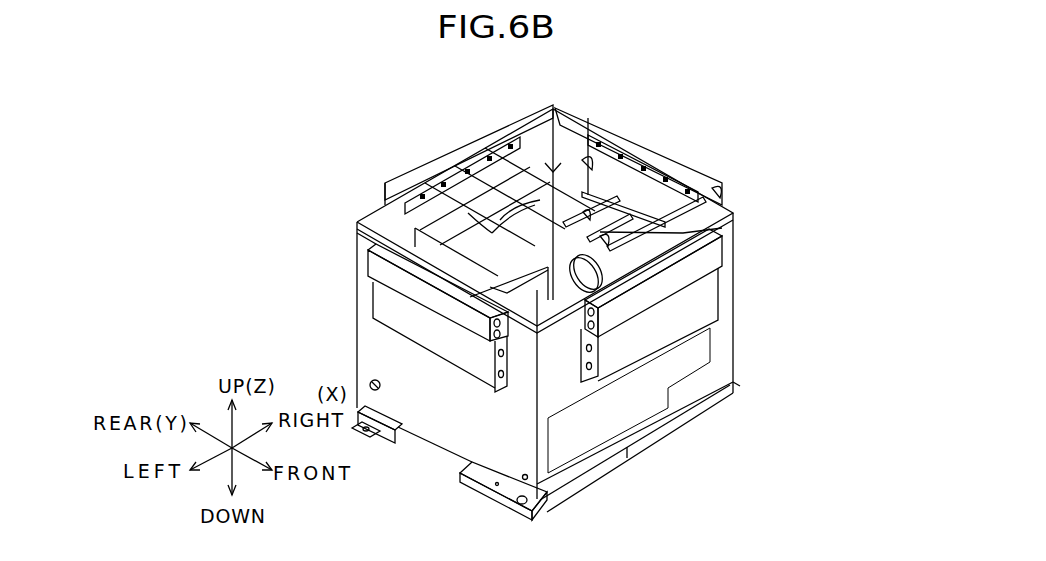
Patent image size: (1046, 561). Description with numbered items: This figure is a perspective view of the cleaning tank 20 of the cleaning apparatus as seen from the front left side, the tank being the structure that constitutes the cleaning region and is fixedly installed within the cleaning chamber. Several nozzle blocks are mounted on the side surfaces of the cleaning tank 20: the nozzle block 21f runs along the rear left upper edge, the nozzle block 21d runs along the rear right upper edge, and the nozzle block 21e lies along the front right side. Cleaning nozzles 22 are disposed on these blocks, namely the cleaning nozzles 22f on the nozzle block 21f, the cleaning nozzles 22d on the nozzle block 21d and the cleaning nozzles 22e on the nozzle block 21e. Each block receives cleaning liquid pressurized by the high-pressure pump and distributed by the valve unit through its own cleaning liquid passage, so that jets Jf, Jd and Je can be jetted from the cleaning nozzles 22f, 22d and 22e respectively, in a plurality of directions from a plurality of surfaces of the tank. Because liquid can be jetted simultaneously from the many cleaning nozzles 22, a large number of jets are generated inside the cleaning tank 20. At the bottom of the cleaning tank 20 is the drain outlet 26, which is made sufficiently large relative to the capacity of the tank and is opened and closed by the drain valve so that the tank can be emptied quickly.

The cleaning tank 20 is at (733, 345).
The nozzle block 21d is at (602, 117).
The nozzle block 21e is at (683, 233).
The nozzle block 21f is at (510, 120).
The cleaning nozzle 22 is at (598, 226).
The cleaning nozzle 22d is at (620, 155).
The cleaning nozzle 22e is at (587, 220).
The cleaning nozzle 22f is at (472, 172).
The drain outlet 26 is at (490, 287).
The jet Jd is at (588, 165).
The jet Je is at (583, 212).
The jet Jf is at (492, 233).